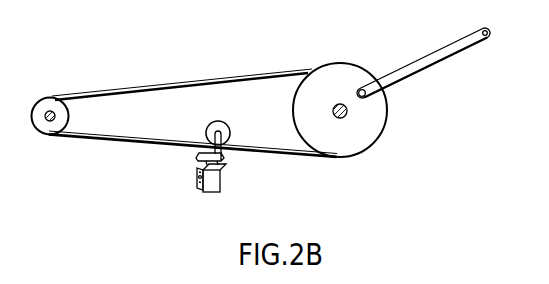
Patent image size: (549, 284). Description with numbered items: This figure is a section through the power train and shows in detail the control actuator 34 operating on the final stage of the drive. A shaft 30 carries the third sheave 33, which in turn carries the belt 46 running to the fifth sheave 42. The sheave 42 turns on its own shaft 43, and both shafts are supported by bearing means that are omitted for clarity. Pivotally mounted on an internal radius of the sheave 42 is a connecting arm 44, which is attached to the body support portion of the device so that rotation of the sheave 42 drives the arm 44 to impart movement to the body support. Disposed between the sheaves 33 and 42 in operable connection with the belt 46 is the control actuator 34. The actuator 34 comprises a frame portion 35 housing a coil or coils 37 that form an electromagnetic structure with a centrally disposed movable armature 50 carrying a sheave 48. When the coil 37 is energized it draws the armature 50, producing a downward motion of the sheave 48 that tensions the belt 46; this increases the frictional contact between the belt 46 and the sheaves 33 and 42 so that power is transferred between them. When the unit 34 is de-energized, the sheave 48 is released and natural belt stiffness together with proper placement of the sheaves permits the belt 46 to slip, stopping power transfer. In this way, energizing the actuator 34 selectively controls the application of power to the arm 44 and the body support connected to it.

The shaft 30 is at (48, 134).
The third sheave 33 is at (52, 108).
The control actuator 34 is at (217, 185).
The frame portion 35 is at (198, 152).
The coil 37 is at (197, 180).
The fifth sheave 42 is at (372, 131).
The shaft 43 is at (340, 104).
The connecting arm 44 is at (452, 51).
The belt 46 is at (237, 75).
The sheave 48 is at (230, 128).
The movable armature 50 is at (225, 154).